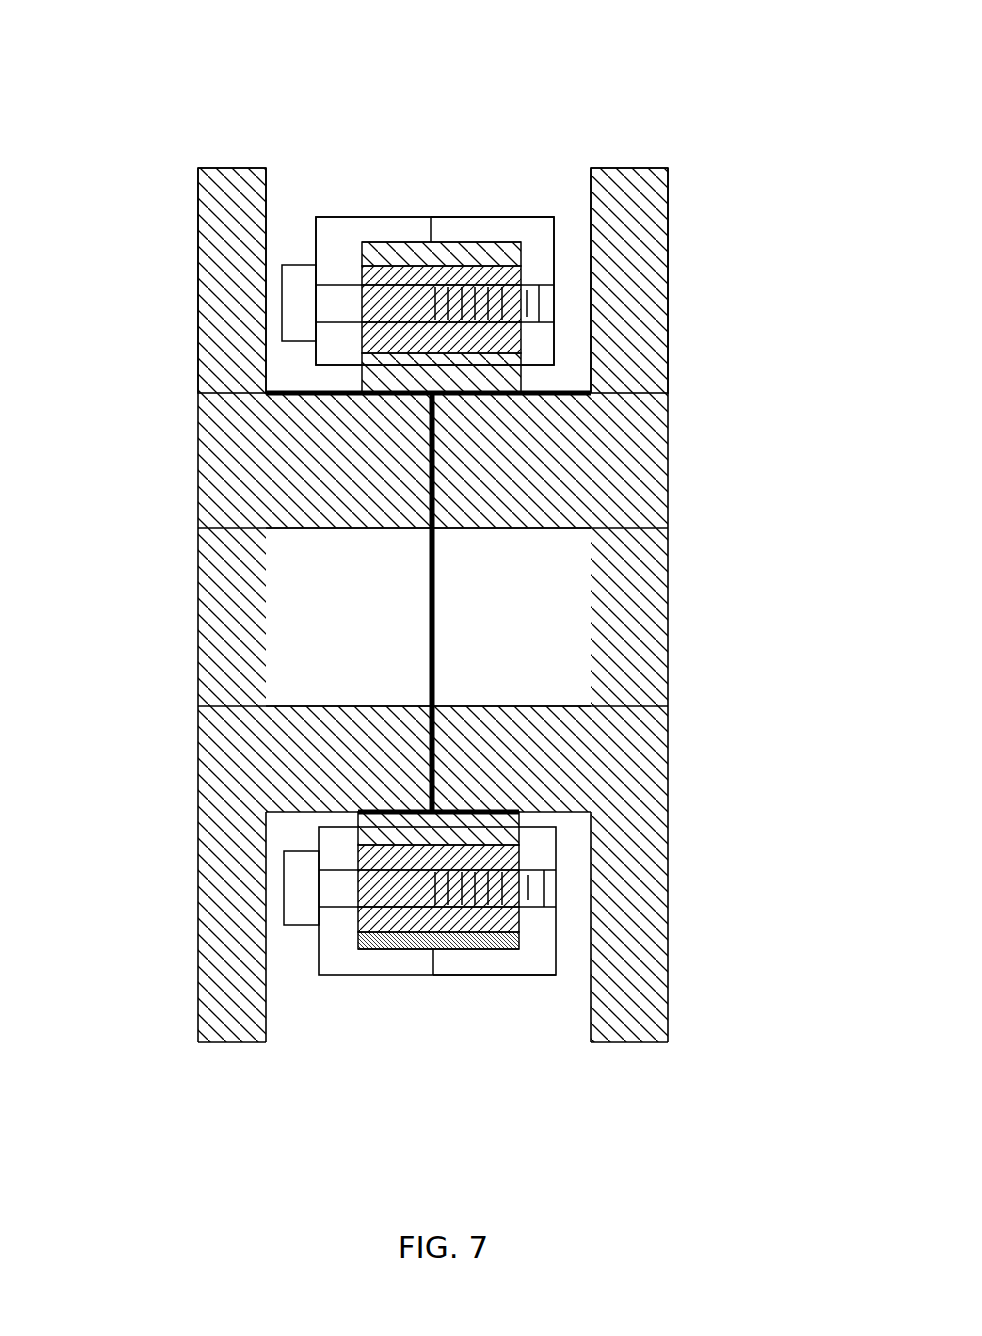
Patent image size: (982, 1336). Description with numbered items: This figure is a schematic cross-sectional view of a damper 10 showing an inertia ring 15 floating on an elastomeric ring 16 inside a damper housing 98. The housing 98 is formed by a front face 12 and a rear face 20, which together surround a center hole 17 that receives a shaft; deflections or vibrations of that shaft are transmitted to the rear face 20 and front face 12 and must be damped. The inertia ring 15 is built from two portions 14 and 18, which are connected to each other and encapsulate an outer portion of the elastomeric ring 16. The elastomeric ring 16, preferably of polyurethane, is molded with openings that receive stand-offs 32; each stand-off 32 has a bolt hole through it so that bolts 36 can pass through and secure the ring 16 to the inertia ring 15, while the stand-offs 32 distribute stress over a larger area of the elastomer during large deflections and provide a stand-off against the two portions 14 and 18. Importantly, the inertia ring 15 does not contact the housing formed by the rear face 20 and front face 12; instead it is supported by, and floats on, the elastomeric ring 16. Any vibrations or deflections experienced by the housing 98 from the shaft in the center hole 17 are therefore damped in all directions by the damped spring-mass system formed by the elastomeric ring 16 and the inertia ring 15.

The damper 10 is at (450, 29).
The front face of housing 12 is at (647, 781).
The inertia ring portion 14 is at (350, 216).
The inertia ring 15 is at (453, 175).
The elastomeric ring 16 is at (521, 252).
The center hole 17 is at (666, 615).
The inertia ring portion 18 is at (513, 216).
The rear face of housing 20 is at (212, 476).
The stand-offs 32 is at (521, 276).
The bolts 36 is at (302, 289).
The damper housing 98 is at (710, 440).